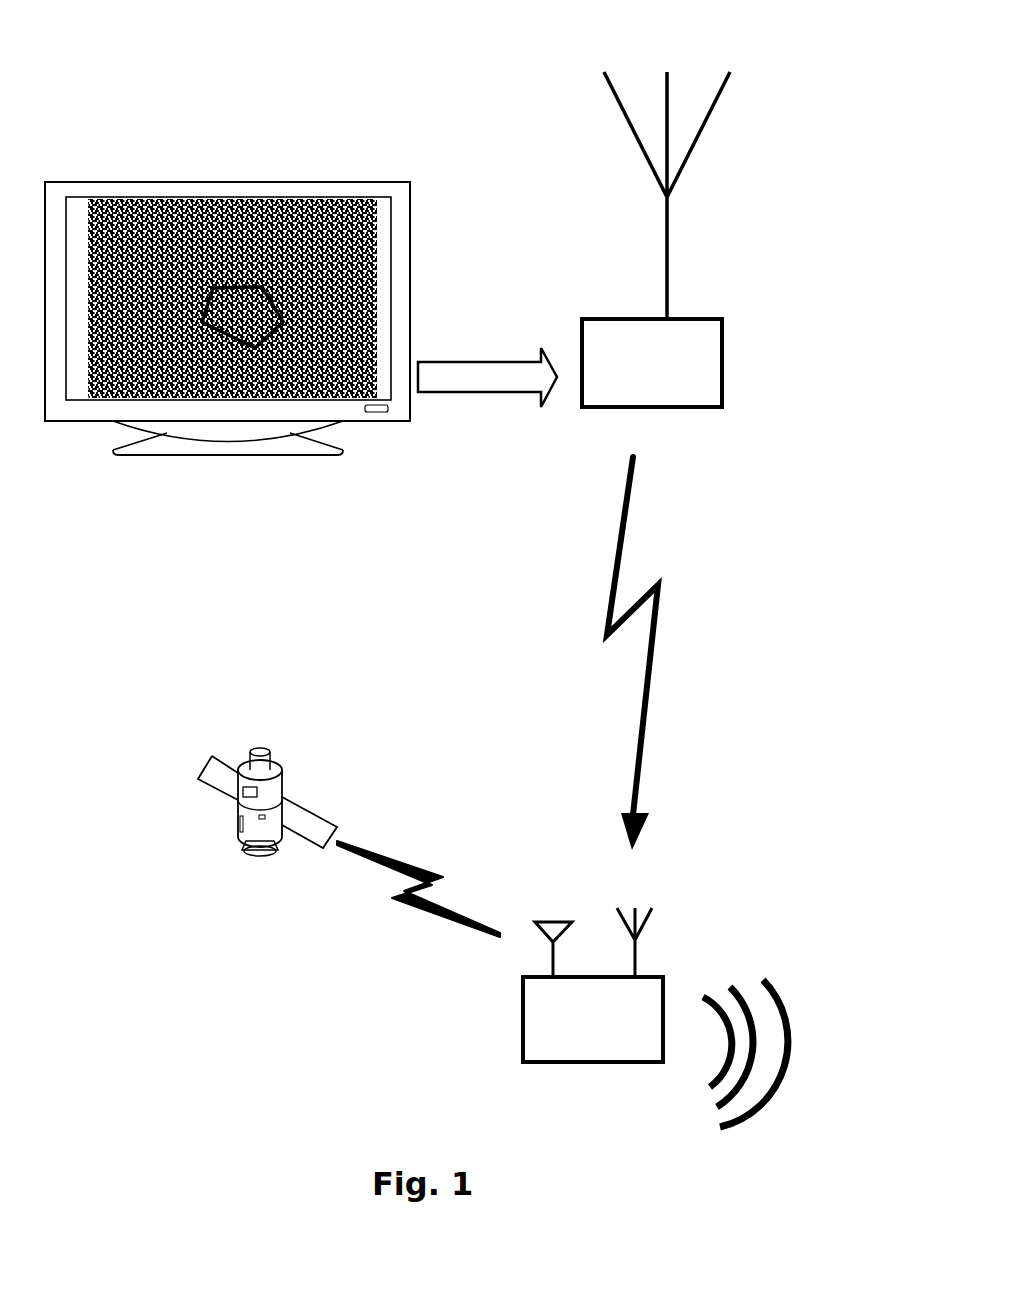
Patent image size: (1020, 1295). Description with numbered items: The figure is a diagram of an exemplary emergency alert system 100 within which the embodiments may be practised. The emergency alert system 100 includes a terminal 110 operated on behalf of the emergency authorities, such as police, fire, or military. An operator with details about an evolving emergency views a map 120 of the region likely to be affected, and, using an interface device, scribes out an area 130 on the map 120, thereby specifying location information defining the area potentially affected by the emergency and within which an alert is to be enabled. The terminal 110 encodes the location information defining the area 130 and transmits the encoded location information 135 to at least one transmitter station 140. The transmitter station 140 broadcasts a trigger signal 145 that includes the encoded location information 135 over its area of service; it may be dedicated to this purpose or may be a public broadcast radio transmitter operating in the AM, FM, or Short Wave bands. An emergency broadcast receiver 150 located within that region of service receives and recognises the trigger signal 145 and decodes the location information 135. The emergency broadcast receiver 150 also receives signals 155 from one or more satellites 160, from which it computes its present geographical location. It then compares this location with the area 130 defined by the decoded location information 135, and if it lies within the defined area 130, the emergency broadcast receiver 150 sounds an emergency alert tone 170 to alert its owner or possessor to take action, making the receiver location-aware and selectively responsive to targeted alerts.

The emergency alert system 100 is at (135, 82).
The terminal 110 is at (318, 182).
The map 120 is at (130, 397).
The area 130 is at (230, 337).
The encoded location information 135 is at (497, 366).
The transmitter station 140 is at (682, 268).
The trigger signal 145 is at (658, 647).
The emergency broadcast receiver 150 is at (663, 977).
The signals 155 is at (388, 862).
The satellite 160 is at (238, 768).
The emergency alert tone 170 is at (720, 1102).